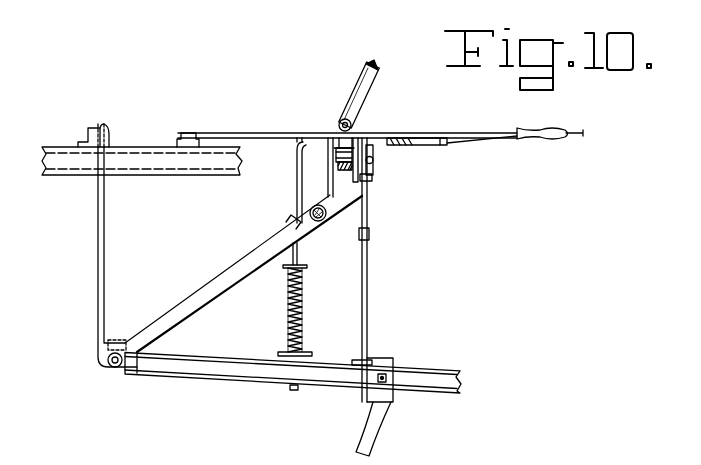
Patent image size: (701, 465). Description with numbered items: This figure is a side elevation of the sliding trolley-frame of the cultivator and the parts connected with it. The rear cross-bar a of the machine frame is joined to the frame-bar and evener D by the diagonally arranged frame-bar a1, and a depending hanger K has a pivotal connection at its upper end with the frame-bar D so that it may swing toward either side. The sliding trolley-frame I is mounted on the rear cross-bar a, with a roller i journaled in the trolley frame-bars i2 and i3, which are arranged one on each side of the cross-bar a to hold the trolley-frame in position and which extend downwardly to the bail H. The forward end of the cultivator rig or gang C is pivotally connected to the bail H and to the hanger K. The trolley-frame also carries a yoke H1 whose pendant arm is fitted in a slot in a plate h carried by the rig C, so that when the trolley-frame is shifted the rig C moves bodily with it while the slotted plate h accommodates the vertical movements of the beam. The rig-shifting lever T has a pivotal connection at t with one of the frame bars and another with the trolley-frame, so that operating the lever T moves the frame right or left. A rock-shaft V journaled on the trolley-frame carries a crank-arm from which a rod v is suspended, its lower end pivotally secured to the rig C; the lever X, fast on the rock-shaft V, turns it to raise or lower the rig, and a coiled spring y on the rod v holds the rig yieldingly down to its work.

The frame-bar a1 is at (130, 153).
The frame-bar D is at (98, 127).
The pivotal connection t is at (188, 133).
The rig-shifting lever T is at (428, 135).
The lever X is at (372, 80).
The rock-shaft V is at (342, 148).
The roller i is at (336, 150).
The trolley frame-bar i2 is at (328, 192).
The rod v is at (297, 200).
The yoke H1 is at (358, 150).
The sliding trolley-frame I is at (374, 161).
The rear cross-bar a is at (373, 177).
The trolley frame-bar i3 is at (359, 228).
The bail H is at (238, 264).
The coiled spring y is at (287, 304).
The hanger K is at (100, 255).
The rig C is at (293, 378).
The plate h is at (370, 362).